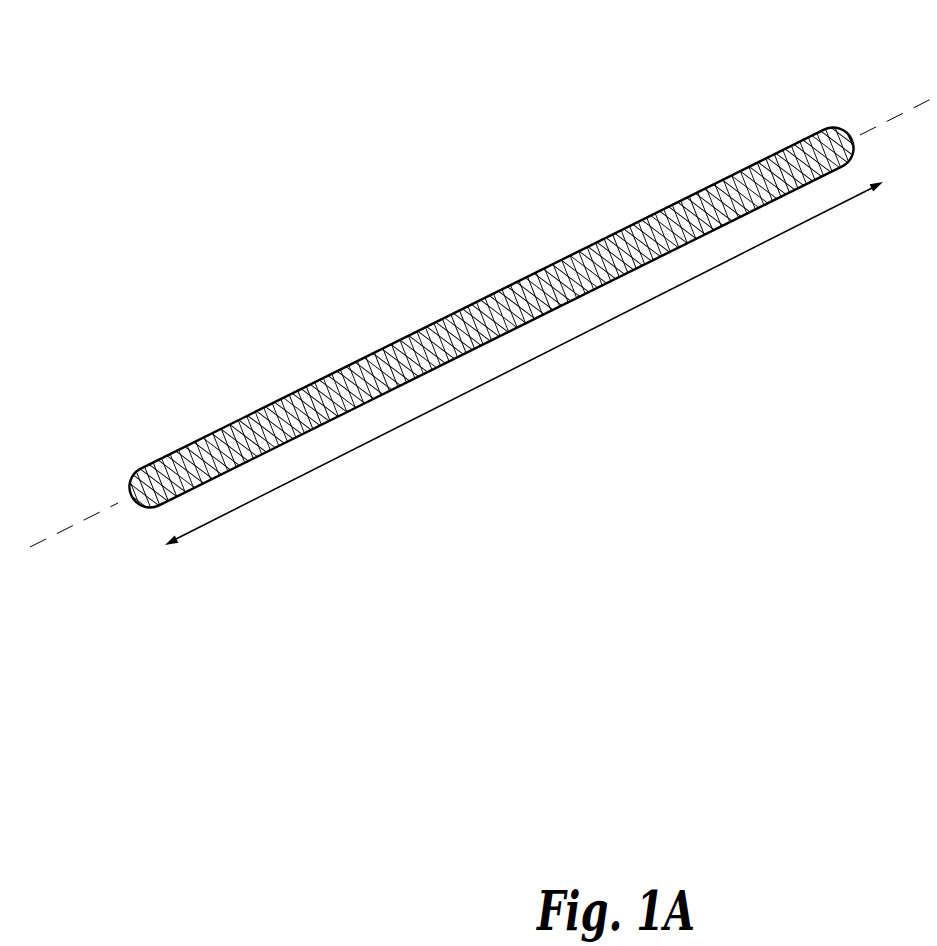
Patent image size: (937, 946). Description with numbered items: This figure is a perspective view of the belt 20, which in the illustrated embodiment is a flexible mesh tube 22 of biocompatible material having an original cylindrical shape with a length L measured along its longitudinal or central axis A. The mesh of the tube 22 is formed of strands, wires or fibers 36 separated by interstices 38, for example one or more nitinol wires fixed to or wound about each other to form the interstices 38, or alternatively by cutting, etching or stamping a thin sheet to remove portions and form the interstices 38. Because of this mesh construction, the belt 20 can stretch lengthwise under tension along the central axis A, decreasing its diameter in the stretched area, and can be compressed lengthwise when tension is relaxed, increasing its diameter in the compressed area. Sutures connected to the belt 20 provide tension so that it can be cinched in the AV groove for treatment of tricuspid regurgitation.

The belt 20 is at (408, 127).
The flexible mesh tube 22 is at (255, 412).
The strands, wires or fibers 36 is at (623, 250).
The interstices 38 is at (673, 232).
The central axis A is at (893, 120).
The length L is at (650, 300).